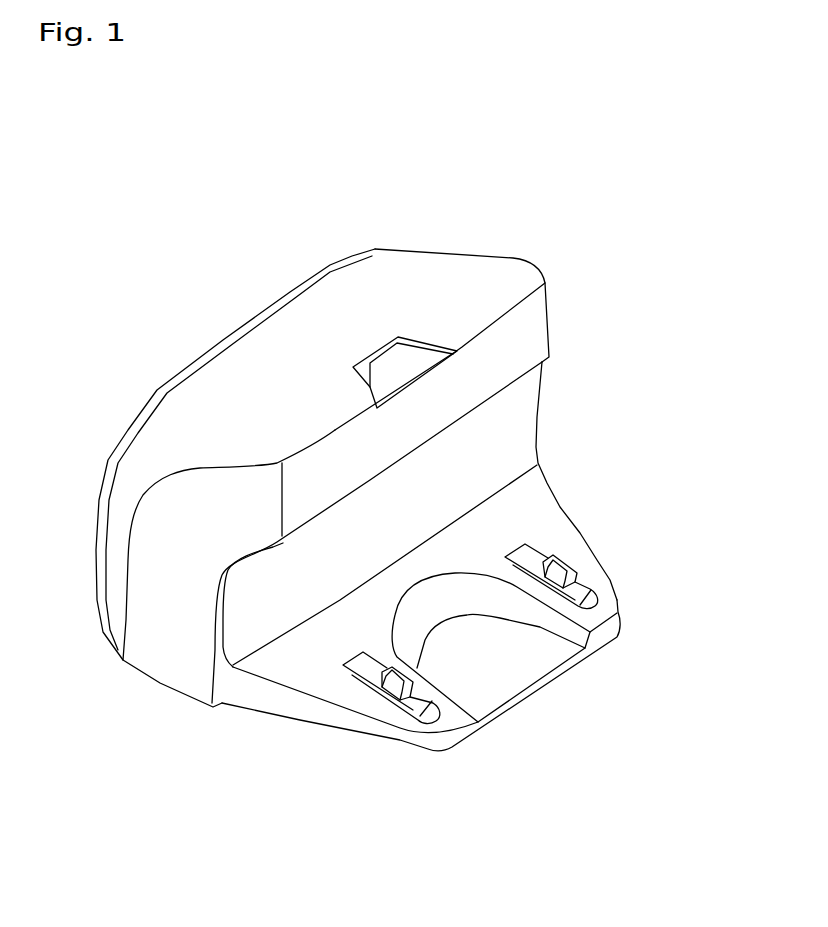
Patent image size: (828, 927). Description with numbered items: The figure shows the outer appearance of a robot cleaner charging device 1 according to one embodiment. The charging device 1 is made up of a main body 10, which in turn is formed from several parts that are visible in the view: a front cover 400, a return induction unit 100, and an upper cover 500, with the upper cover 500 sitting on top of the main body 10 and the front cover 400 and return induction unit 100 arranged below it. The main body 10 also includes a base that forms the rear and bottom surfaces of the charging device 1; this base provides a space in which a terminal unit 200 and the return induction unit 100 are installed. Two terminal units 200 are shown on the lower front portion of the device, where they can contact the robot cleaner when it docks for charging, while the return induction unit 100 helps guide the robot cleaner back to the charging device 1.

The robot cleaner charging device 1 is at (385, 242).
The main body 10 is at (673, 291).
The return induction unit 100 is at (487, 388).
The terminal unit 200 is at (563, 563).
The front cover 400 is at (503, 437).
The upper cover 500 is at (487, 283).